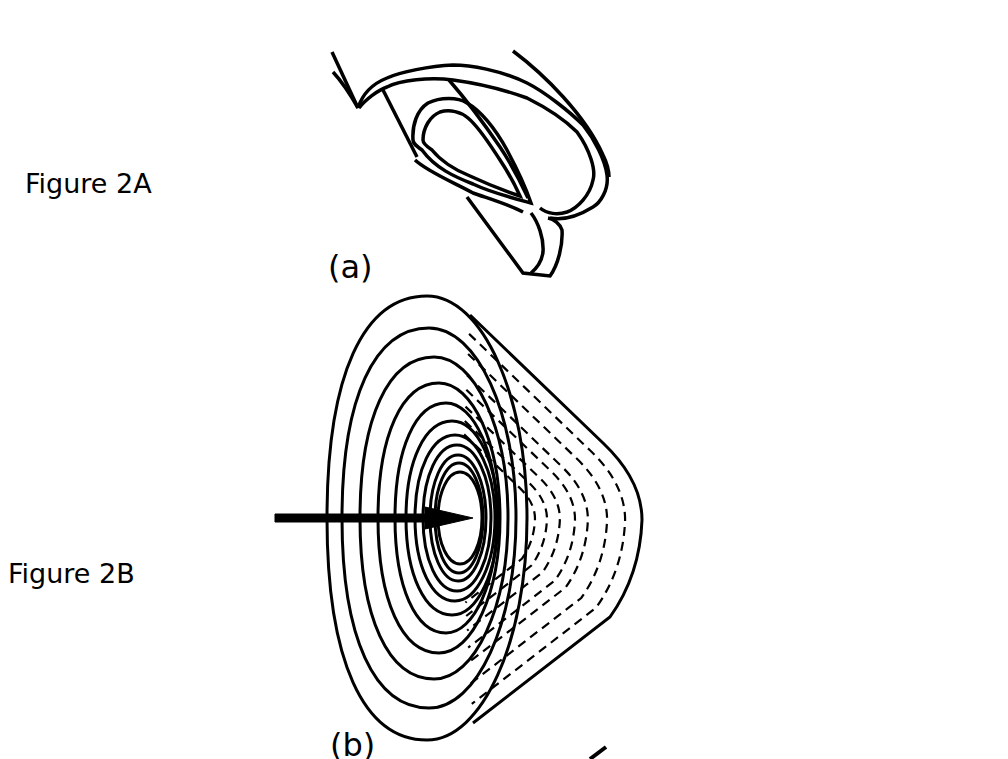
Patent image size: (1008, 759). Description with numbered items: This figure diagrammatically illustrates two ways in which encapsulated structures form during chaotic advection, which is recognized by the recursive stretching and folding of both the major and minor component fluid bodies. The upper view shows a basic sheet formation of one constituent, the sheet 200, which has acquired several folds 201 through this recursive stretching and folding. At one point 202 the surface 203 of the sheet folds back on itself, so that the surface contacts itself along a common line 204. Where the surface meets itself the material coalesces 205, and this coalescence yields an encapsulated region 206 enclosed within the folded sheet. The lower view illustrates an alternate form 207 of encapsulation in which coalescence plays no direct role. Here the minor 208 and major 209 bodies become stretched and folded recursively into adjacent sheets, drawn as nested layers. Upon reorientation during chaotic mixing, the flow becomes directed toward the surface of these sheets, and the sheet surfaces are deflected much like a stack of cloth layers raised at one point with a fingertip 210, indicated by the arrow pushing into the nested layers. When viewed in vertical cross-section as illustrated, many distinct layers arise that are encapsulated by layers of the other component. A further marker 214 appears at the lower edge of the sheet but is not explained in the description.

In FIG. 2A, the sheet 200 is at (508, 50).
In FIG. 2A, the folds 201 is at (403, 120).
In FIG. 2A, the point 202 is at (527, 209).
In FIG. 2A, the surface 203 is at (467, 103).
In FIG. 2A, the common line 204 is at (596, 154).
In FIG. 2A, the coalescence 205 is at (548, 228).
In FIG. 2A, the encapsulated region 206 is at (457, 155).
In FIG. 2B, the alternate form of encapsulation 207 is at (618, 443).
In FIG. 2B, the minor body 208 is at (368, 343).
In FIG. 2B, the major body 209 is at (360, 390).
In FIG. 2B, the fingertip 210 is at (270, 516).
In FIG. 2B, the arrow marker 214 is at (660, 758).